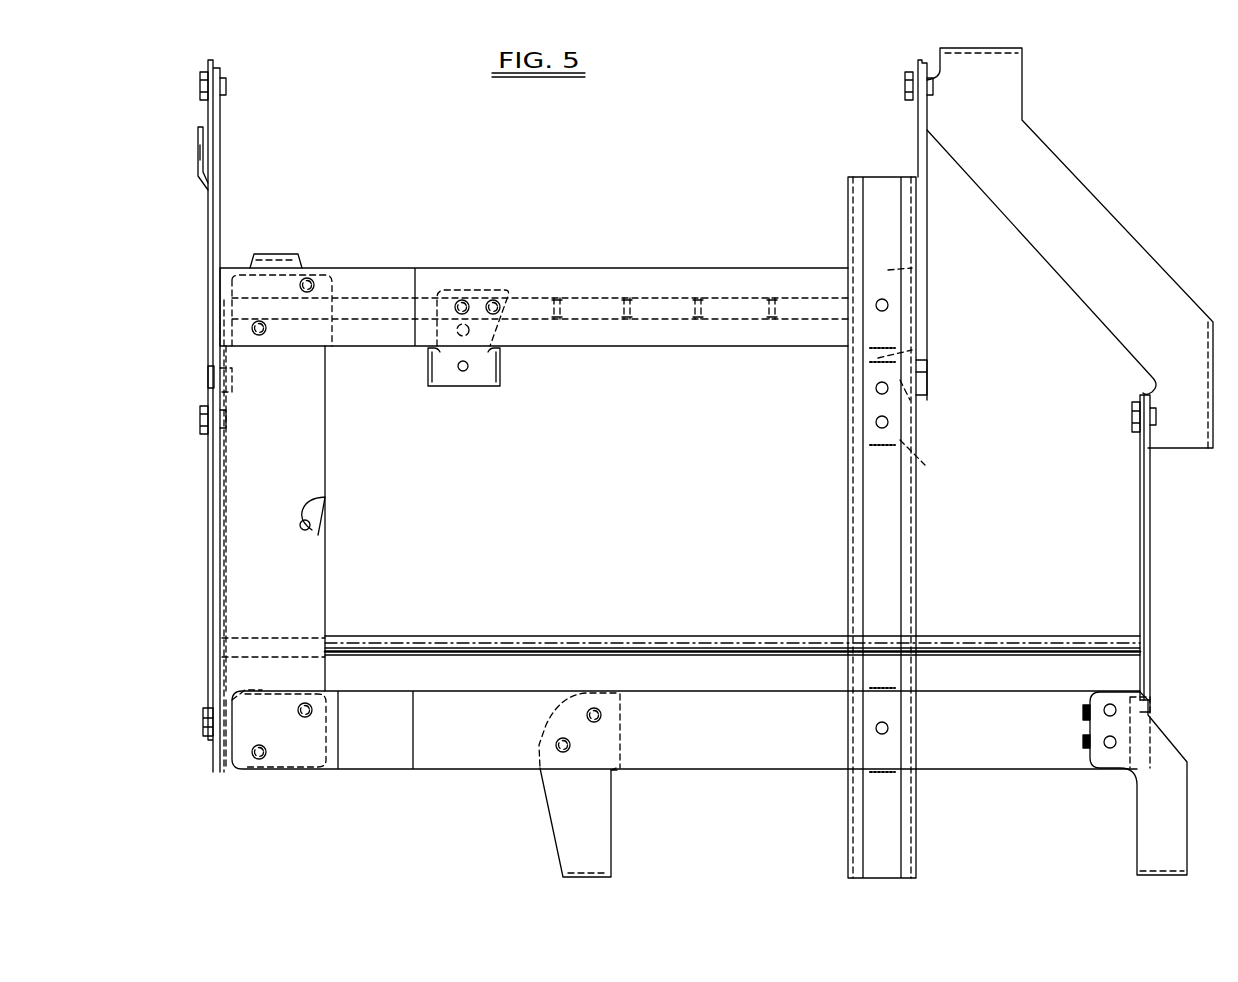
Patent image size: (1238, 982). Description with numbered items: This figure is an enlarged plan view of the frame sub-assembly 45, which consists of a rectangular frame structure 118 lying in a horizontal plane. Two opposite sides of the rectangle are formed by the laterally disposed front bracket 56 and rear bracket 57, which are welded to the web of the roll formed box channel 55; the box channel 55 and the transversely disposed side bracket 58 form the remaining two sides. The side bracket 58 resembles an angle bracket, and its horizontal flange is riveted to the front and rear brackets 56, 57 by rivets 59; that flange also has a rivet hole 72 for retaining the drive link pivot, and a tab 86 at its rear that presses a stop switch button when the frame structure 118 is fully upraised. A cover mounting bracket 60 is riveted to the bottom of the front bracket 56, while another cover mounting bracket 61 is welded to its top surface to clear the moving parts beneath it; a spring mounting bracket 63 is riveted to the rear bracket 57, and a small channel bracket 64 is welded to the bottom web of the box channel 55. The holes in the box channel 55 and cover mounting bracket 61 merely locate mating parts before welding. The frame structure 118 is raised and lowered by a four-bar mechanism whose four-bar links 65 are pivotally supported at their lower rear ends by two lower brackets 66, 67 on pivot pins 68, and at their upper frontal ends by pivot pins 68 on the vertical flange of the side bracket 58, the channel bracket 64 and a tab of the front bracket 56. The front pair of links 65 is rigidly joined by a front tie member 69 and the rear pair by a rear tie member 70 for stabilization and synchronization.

The frame sub-assembly 45 is at (668, 138).
The box channel 55 is at (850, 480).
The front bracket 56 is at (447, 770).
The rear bracket 57 is at (628, 272).
The side bracket 58 is at (322, 455).
The rivets 59 is at (310, 280).
The cover mounting bracket 60 is at (612, 820).
The cover mounting bracket 61 is at (1140, 815).
The spring mounting bracket 63 is at (478, 385).
The channel bracket 64 is at (912, 456).
The four-bar links 65 is at (222, 128).
The lower bracket 66 is at (1098, 206).
The lower bracket 67 is at (206, 240).
The pivot pins 68 is at (200, 80).
The front tie member 69 is at (562, 640).
The rear tie member 70 is at (733, 297).
The rivet hole 72 is at (325, 506).
The tab 86 is at (270, 253).
The frame structure 118 is at (818, 440).